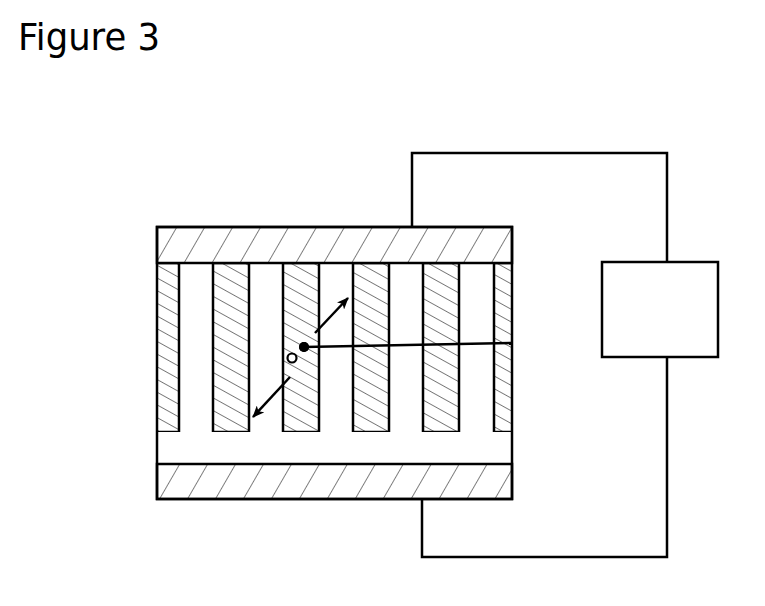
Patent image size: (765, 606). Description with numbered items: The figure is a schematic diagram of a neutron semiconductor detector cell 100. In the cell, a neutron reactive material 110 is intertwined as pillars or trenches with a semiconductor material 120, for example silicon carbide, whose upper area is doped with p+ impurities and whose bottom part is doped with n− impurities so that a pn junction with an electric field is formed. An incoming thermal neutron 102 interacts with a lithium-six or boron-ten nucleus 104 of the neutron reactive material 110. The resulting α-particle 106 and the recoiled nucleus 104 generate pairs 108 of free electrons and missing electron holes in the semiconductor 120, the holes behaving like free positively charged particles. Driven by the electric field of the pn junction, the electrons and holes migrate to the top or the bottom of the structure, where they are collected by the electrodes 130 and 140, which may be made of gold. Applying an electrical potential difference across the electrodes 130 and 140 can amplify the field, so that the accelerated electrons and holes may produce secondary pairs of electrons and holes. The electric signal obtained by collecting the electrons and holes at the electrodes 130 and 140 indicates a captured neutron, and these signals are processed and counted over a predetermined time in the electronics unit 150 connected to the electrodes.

The neutron semiconductor detector cell 100 is at (128, 152).
The incoming thermal neutron 102 is at (283, 333).
The nucleus 104 is at (512, 343).
The α-particle 106 is at (287, 357).
The pairs of free electrons and holes 108 is at (307, 364).
The neutron reactive material 110 is at (302, 243).
The semiconductor material 120 is at (437, 449).
The electrode 130 is at (446, 243).
The electrode 140 is at (381, 488).
The electronics unit 150 is at (645, 262).